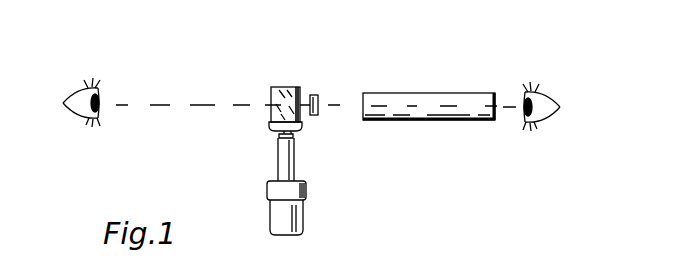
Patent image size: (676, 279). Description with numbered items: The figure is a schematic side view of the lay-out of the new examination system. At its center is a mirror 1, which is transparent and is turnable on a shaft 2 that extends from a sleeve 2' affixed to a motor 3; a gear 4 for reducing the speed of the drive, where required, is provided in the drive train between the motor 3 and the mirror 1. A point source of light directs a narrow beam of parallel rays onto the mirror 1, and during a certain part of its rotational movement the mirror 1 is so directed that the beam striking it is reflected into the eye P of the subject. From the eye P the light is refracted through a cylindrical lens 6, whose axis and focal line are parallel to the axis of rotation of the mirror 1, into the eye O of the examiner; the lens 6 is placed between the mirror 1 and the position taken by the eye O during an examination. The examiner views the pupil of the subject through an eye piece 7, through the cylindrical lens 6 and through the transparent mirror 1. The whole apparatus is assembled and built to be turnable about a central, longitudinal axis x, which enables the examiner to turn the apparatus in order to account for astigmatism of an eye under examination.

The mirror 1 is at (272, 88).
The shaft 2 is at (263, 147).
The sleeve 2' is at (301, 159).
The motor 3 is at (303, 224).
The gear 4 is at (268, 188).
The cylindrical lens 6 is at (313, 95).
The eye piece 7 is at (432, 120).
The eye of the subject P is at (72, 87).
The eye of the examiner O is at (547, 86).
The central longitudinal axis x is at (163, 103).